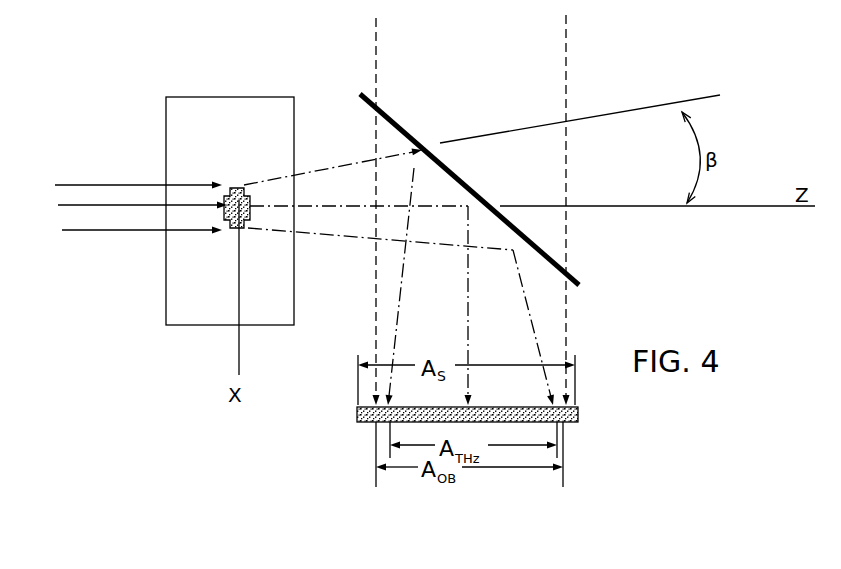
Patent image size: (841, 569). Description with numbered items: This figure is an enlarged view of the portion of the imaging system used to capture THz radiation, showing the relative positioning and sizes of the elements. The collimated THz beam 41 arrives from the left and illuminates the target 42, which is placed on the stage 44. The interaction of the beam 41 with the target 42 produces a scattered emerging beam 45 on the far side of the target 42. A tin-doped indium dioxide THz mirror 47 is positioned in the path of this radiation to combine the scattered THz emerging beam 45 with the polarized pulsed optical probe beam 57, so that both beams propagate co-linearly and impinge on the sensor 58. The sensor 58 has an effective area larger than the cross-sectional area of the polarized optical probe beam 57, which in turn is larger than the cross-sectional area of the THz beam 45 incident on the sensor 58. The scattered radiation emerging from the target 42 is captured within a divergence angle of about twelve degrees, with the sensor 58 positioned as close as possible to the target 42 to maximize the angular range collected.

The collimated THz beam 41 is at (93, 187).
The target 42 is at (233, 187).
The stage 44 is at (208, 126).
The scattered emerging beam 45 is at (347, 165).
The THz mirror 47 is at (580, 278).
The polarized pulsed optical probe beam 57 is at (536, 58).
The sensor 58 is at (402, 415).